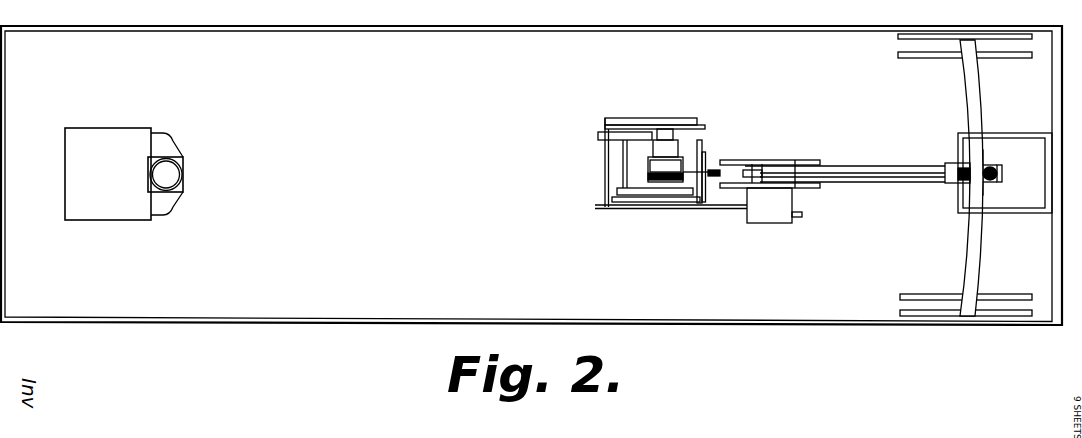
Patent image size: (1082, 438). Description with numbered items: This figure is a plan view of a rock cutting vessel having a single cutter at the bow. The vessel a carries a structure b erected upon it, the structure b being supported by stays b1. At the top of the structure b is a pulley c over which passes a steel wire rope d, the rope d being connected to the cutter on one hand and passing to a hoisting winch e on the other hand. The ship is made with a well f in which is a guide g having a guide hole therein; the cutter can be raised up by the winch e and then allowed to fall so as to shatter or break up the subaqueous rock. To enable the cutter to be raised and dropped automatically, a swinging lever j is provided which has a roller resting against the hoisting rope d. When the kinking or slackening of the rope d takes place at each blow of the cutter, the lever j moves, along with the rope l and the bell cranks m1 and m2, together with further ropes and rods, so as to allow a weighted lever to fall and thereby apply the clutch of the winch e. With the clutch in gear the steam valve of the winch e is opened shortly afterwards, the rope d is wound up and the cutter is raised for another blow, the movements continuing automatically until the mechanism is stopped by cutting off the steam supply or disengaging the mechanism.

The vessel a is at (531, 175).
The hoisting winch e is at (637, 157).
The steel wire rope d is at (690, 173).
The bell crank m2 is at (718, 170).
The bell crank m1 is at (753, 170).
The rope l is at (845, 170).
The stays b1 is at (970, 73).
The structure b is at (983, 157).
The pulley c is at (958, 187).
The well f is at (1027, 128).
The swinging lever j is at (1000, 177).
The guide g is at (1033, 197).